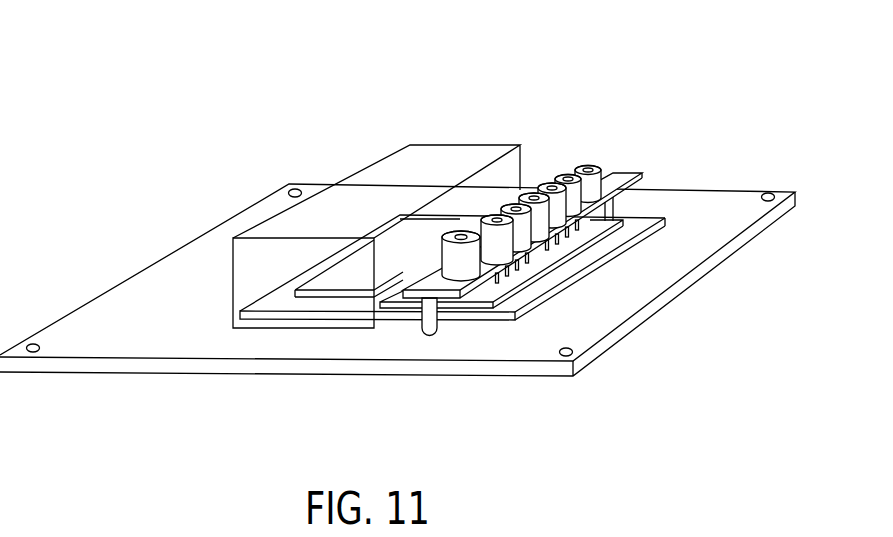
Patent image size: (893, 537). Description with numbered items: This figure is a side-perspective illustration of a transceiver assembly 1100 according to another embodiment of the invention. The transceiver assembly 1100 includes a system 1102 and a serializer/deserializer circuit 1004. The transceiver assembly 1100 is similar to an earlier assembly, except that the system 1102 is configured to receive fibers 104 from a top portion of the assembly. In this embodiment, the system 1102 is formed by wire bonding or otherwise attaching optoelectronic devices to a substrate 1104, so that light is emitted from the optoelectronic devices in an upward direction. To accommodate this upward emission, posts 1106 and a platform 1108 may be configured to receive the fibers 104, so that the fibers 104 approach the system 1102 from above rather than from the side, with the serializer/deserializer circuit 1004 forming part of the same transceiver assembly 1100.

The transceiver assembly 1100 is at (204, 162).
The serializer/deserializer circuit 1004 is at (452, 87).
The system 1102 is at (625, 148).
The fibers 104 is at (488, 219).
The substrate 1104 is at (610, 234).
The posts 1106 is at (430, 337).
The platform 1108 is at (527, 247).